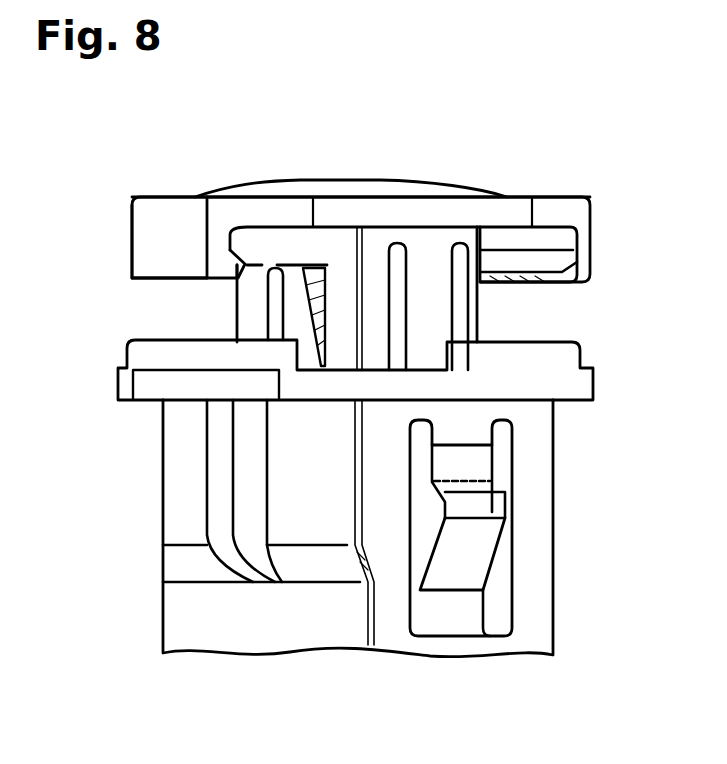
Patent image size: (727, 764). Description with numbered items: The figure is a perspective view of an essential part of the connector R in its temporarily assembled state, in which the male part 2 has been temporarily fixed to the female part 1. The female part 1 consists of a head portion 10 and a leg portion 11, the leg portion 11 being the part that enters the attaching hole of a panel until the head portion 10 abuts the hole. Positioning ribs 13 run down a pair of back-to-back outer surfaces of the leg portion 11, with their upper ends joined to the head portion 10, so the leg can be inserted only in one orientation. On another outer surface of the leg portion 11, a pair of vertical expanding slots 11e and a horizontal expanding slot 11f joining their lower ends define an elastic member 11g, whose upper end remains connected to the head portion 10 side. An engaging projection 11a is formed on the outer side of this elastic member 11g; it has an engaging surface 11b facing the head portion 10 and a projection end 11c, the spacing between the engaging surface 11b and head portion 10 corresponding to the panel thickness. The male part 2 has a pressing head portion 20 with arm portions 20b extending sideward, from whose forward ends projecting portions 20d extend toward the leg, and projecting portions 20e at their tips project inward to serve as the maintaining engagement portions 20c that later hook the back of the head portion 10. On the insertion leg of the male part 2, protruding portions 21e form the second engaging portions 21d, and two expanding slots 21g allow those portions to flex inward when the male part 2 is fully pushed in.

The male part 2 is at (372, 182).
The pressing head portion 20 is at (412, 183).
The arm portions 20b is at (237, 205).
The projecting portions 20d is at (148, 240).
The maintaining engagement portions 20c is at (368, 288).
The projecting portions 20e is at (244, 266).
The second engaging portions 21d is at (306, 252).
The protruding portions 21e is at (295, 305).
The expanding slots 21g is at (397, 262).
The connector R is at (535, 152).
The head portion 10 is at (565, 383).
The female part 1 is at (376, 567).
The leg portion 11 is at (535, 518).
The positioning ribs 13 is at (217, 455).
The vertical expanding slots 11e is at (505, 432).
The engaging surface 11b is at (478, 490).
The projection ends 11c is at (465, 538).
The engaging projections 11a is at (492, 510).
The elastic member 11g is at (413, 538).
The horizontal expanding slot 11f is at (443, 617).